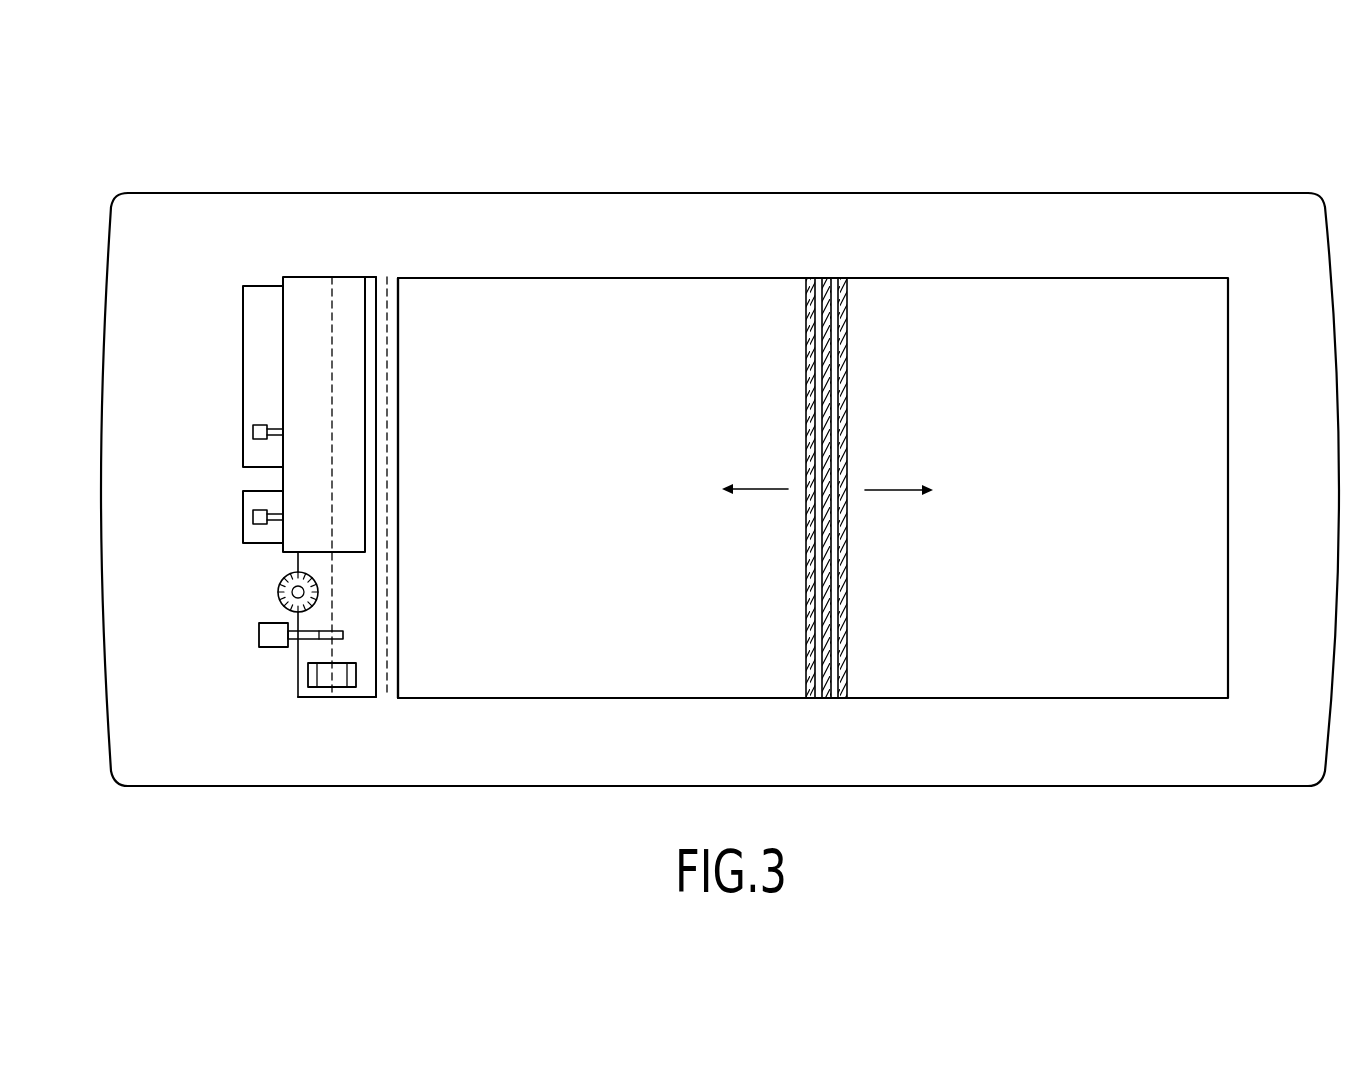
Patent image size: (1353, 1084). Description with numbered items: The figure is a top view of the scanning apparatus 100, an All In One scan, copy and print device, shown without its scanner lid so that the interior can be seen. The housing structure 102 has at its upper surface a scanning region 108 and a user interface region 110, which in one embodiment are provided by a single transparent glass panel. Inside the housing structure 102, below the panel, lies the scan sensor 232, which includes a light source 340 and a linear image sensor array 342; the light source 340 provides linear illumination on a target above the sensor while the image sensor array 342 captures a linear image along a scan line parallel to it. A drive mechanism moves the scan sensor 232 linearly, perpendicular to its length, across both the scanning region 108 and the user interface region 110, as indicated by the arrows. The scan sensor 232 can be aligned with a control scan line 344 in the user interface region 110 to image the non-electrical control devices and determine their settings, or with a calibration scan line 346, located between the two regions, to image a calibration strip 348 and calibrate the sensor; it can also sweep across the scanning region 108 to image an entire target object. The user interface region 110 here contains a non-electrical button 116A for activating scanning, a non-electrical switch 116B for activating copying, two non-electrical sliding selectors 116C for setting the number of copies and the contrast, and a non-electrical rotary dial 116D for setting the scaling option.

The scanning apparatus 100 is at (720, 428).
The housing structure 102 is at (904, 192).
The scanning region 108 is at (810, 461).
The user interface region 110 is at (271, 557).
The non-electrical button 116A is at (259, 634).
The non-electrical switch 116B is at (308, 672).
The non-electrical sliding selector 116C is at (243, 370).
The non-electrical rotary dial 116D is at (279, 584).
The scan sensor 232 is at (840, 488).
The light source 340 is at (836, 568).
The linear image sensor array 342 is at (810, 488).
The control scan line 344 is at (332, 716).
The calibration scan line 346 is at (387, 716).
The calibration strip 348 is at (393, 568).